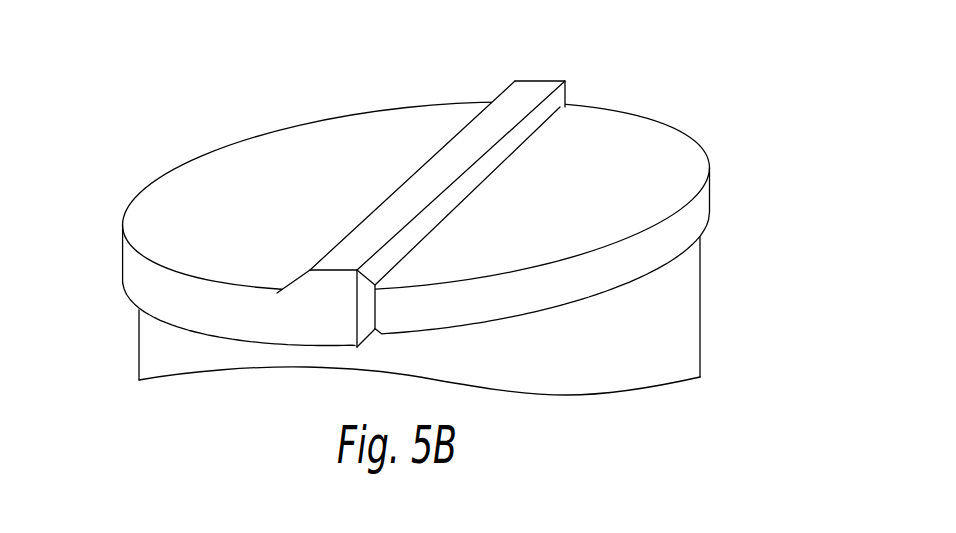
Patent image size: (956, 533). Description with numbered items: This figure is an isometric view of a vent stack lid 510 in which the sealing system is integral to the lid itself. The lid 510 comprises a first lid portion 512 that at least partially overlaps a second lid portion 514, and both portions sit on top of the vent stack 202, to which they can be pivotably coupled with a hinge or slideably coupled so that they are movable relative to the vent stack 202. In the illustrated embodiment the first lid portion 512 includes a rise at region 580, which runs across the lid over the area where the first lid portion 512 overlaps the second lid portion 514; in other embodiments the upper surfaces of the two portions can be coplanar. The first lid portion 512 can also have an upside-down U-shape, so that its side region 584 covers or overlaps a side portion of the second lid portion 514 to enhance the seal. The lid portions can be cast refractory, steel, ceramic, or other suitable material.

The vent stack lid 510 is at (430, 179).
The first lid portion 512 is at (210, 175).
The second lid portion 514 is at (647, 135).
The rise region 580 is at (517, 97).
The side region 584 is at (322, 285).
The vent stack 202 is at (700, 330).